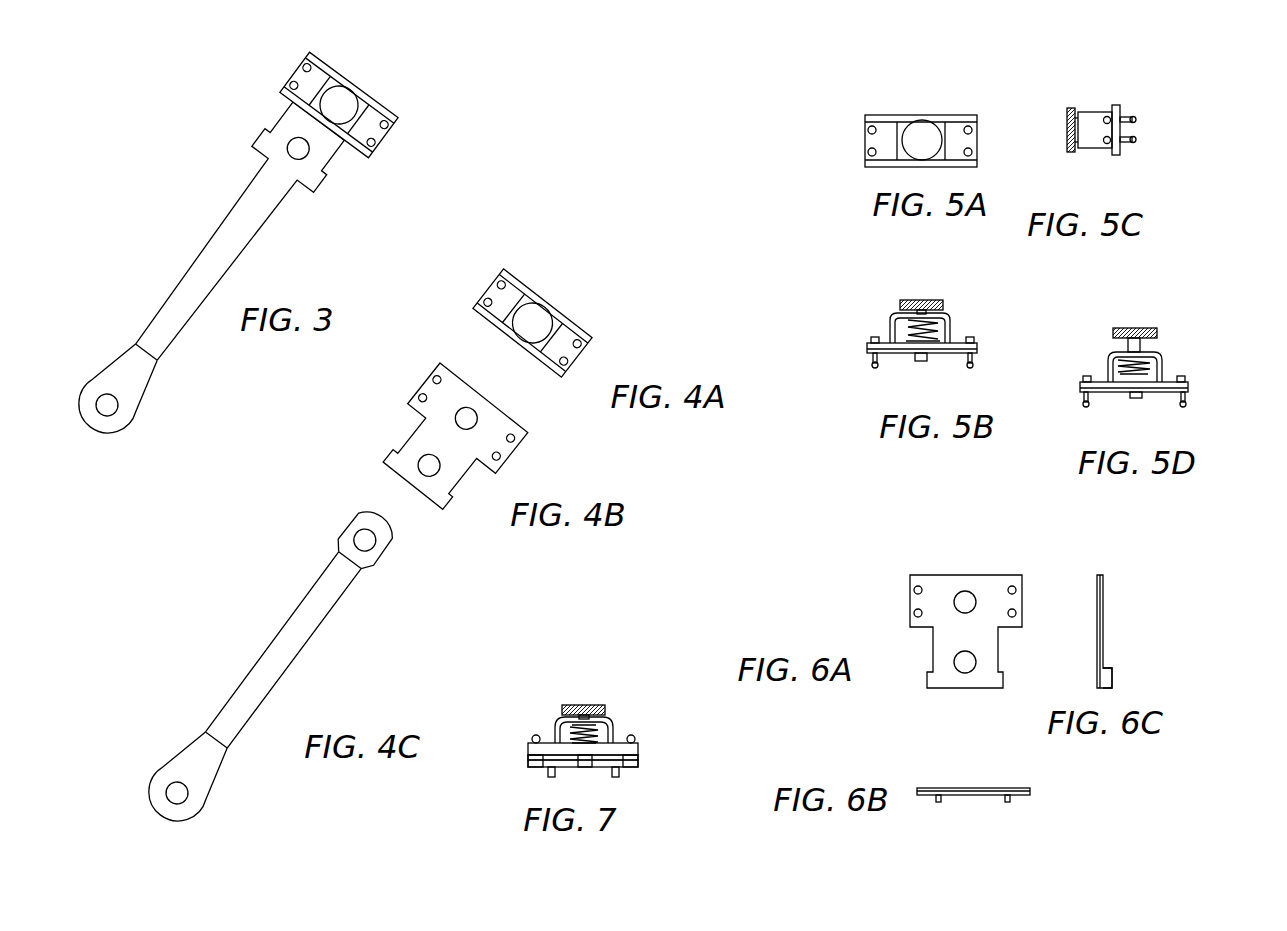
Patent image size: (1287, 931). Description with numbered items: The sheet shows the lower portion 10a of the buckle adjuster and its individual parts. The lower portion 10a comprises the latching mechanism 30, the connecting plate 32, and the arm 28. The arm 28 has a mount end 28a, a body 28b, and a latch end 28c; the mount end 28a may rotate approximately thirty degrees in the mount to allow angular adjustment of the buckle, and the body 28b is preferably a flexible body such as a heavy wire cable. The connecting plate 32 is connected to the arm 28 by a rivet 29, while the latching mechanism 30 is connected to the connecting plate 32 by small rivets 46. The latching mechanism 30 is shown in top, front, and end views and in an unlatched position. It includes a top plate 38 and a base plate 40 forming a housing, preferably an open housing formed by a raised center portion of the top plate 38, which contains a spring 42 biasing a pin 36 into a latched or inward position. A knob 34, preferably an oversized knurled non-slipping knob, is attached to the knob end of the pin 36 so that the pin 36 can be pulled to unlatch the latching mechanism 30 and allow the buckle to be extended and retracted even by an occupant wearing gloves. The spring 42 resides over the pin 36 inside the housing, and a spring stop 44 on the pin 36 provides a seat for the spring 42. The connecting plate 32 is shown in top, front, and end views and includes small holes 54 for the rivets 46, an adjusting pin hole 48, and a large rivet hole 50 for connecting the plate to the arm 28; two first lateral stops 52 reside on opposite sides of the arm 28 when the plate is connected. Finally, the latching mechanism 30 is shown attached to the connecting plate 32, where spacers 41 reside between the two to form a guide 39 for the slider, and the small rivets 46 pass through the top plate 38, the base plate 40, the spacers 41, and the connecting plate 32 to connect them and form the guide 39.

In FIG. 3, the lower portion 10a is at (253, 235).
In FIG. 4C, the arm 28 is at (260, 658).
In FIG. 4C, the mount end 28a is at (183, 770).
In FIG. 4C, the body 28b is at (285, 640).
In FIG. 4C, the latch end 28c is at (367, 508).
In FIG. 3, the rivet 29 is at (300, 150).
In FIG. 4A, the latching mechanism 30 is at (574, 274).
In FIG. 5A, the latching mechanism 30 is at (891, 101).
In FIG. 5C, the latching mechanism 30 is at (1054, 99).
In FIG. 5B, the latching mechanism 30 is at (864, 282).
In FIG. 5D, the latching mechanism 30 is at (1152, 314).
In FIG. 4B, the connecting plate 32 is at (447, 427).
In FIG. 7, the connecting plate 32 is at (597, 769).
In FIG. 6A, the connecting plate 32 is at (882, 606).
In FIG. 6C, the connecting plate 32 is at (1084, 576).
In FIG. 6B, the connecting plate 32 is at (1064, 801).
In FIG. 5A, the knob 34 is at (925, 122).
In FIG. 5C, the knob 34 is at (1071, 108).
In FIG. 5B, the knob 34 is at (915, 302).
In FIG. 5D, the knob 34 is at (1123, 327).
In FIG. 5B, the pin 36 is at (924, 361).
In FIG. 5D, the pin 36 is at (1138, 394).
In FIG. 7, the top plate 38 is at (604, 718).
In FIG. 5A, the top plate 38 is at (873, 140).
In FIG. 5C, the top plate 38 is at (1093, 140).
In FIG. 5B, the top plate 38 is at (900, 318).
In FIG. 7, the guide 39 is at (552, 763).
In FIG. 7, the base plate 40 is at (640, 748).
In FIG. 5B, the base plate 40 is at (868, 349).
In FIG. 7, the spacers 41 is at (640, 759).
In FIG. 5B, the spring 42 is at (937, 327).
In FIG. 5D, the spring 42 is at (1118, 358).
In FIG. 5B, the spring stop 44 is at (943, 342).
In FIG. 3, the small rivets 46 is at (306, 60).
In FIG. 7, the small rivets 46 is at (533, 736).
In FIG. 5B, the small rivets 46 is at (868, 360).
In FIG. 6A, the adjusting pin hole 48 is at (963, 597).
In FIG. 6A, the large rivet hole 50 is at (963, 662).
In FIG. 6C, the first lateral stops 52 is at (1112, 677).
In FIG. 6B, the first lateral stops 52 is at (943, 803).
In FIG. 6A, the small holes 54 is at (917, 587).